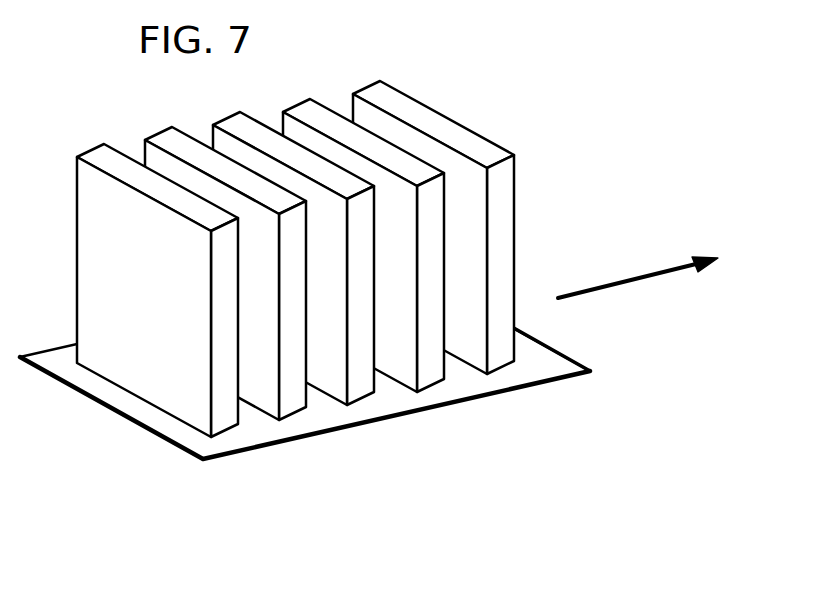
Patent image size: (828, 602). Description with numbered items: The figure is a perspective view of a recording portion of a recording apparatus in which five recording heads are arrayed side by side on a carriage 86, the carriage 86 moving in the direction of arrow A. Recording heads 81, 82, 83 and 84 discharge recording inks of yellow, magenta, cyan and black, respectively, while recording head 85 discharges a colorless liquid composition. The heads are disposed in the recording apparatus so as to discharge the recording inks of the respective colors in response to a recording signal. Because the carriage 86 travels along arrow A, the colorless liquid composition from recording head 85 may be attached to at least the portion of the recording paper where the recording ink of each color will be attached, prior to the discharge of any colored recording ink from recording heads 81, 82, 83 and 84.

The recording head 81 is at (226, 428).
The recording head 82 is at (295, 411).
The recording head 83 is at (361, 397).
The recording head 84 is at (431, 383).
The recording head 85 is at (501, 366).
The carriage 86 is at (182, 437).
The arrow A is at (652, 278).